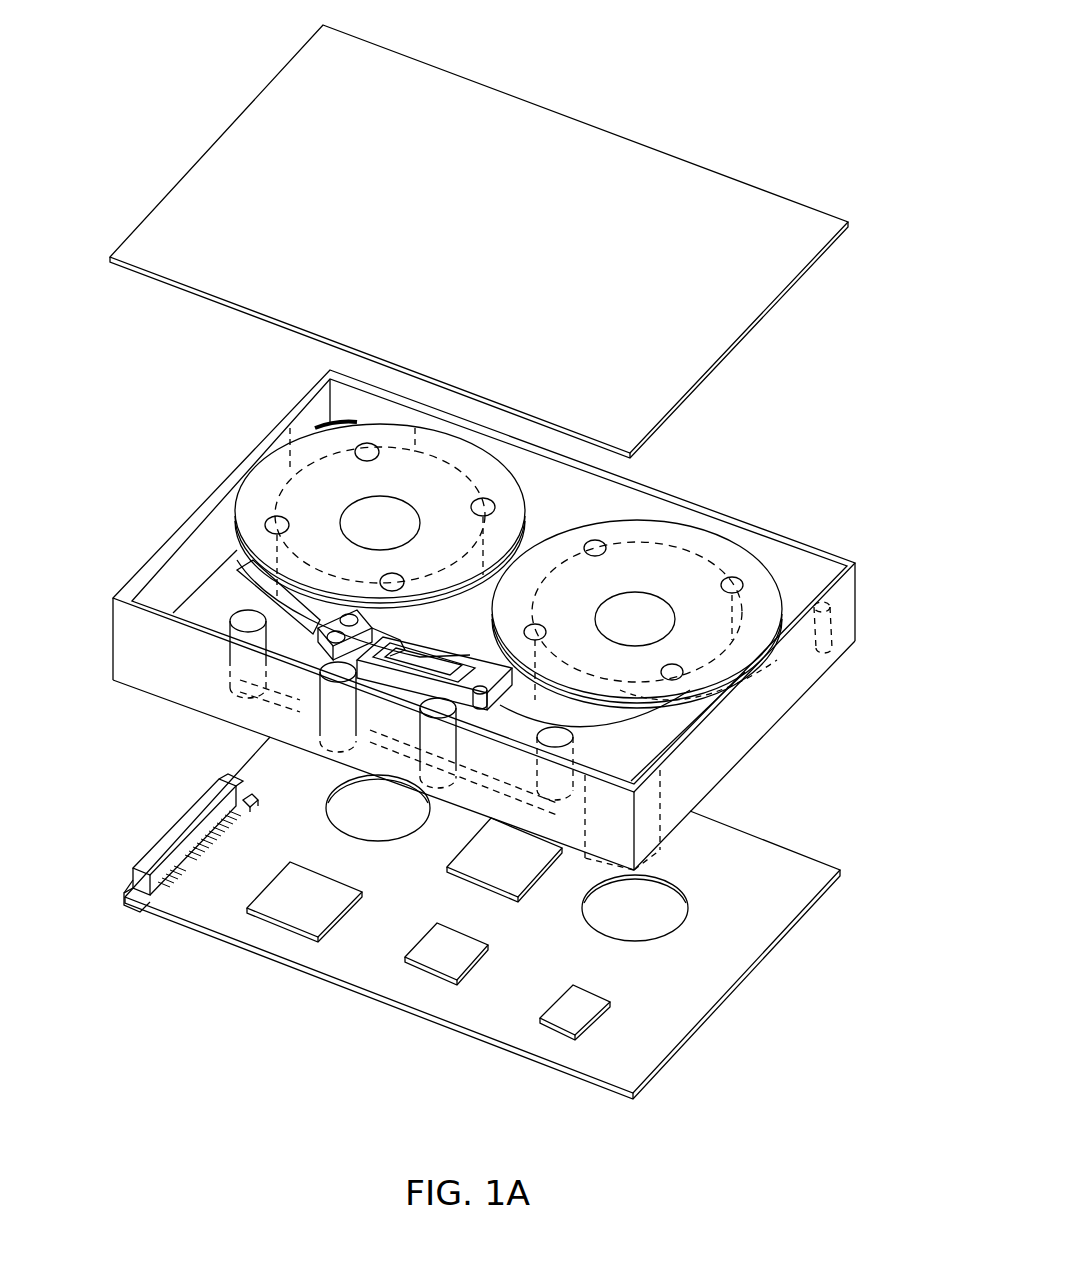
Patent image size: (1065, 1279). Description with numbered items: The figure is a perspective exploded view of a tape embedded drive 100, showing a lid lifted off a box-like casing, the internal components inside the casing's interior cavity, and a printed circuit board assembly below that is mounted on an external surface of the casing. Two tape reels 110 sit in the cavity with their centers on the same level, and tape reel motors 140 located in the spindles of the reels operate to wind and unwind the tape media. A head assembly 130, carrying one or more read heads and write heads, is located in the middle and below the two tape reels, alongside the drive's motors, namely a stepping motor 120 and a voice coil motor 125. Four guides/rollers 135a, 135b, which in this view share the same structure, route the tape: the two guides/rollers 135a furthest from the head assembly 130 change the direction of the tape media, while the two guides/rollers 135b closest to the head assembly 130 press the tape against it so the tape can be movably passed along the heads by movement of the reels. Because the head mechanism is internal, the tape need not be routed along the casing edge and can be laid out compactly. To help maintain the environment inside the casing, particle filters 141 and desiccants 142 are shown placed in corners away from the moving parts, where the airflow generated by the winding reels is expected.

The tape embedded drive 100 is at (753, 92).
The tape reels 110 is at (437, 428).
The stepping motor 120 is at (302, 636).
The voice coil motor 125 is at (405, 650).
The head assembly 130 is at (415, 690).
The guides/rollers 135a is at (243, 618).
The guides/rollers 135b is at (333, 680).
The tape reel motors 140 is at (347, 503).
The particle filters 141 is at (833, 625).
The desiccants 142 is at (663, 817).